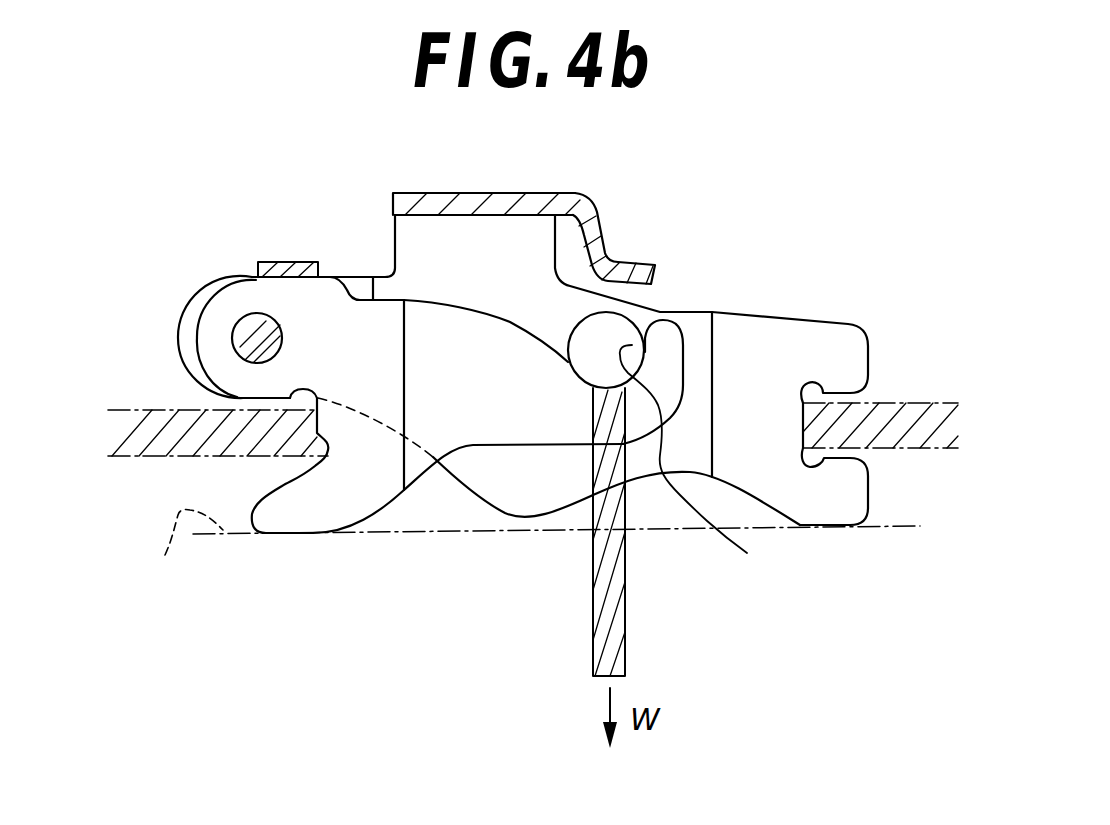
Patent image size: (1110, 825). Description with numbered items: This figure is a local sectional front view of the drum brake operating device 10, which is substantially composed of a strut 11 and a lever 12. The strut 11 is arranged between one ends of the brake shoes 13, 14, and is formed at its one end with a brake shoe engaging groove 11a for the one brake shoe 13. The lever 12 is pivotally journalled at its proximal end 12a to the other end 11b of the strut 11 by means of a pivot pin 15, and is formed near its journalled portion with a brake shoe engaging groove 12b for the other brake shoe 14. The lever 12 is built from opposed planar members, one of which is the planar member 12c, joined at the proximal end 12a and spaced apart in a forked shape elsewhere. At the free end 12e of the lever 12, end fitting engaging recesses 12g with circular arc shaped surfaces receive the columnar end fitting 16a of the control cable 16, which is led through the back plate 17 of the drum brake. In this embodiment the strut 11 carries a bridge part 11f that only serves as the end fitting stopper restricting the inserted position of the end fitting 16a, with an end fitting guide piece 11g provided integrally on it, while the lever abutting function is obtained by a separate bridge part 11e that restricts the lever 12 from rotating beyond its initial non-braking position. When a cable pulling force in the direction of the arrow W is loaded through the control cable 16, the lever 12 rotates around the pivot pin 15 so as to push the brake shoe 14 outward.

The drum brake operating device 10 is at (228, 270).
The strut 11 is at (728, 297).
The brake shoe engaging groove 11a is at (827, 393).
The other end of the strut 11b is at (180, 327).
The upper bridge part 11e is at (293, 260).
The bridge part 11f is at (441, 192).
The end fitting guide piece 11g is at (603, 228).
The lever 12 is at (405, 510).
The proximal end of the lever 12a is at (200, 350).
The brake shoe engaging groove 12b is at (294, 456).
The planar member 12c is at (522, 408).
The free end of the lever 12e is at (668, 335).
The end fitting engaging recess 12g is at (707, 470).
The brake shoe 13 is at (912, 403).
The brake shoe 14 is at (152, 456).
The pivot pin 15 is at (244, 325).
The control cable 16 is at (628, 617).
The end fitting 16a is at (650, 310).
The back plate 17 is at (181, 554).